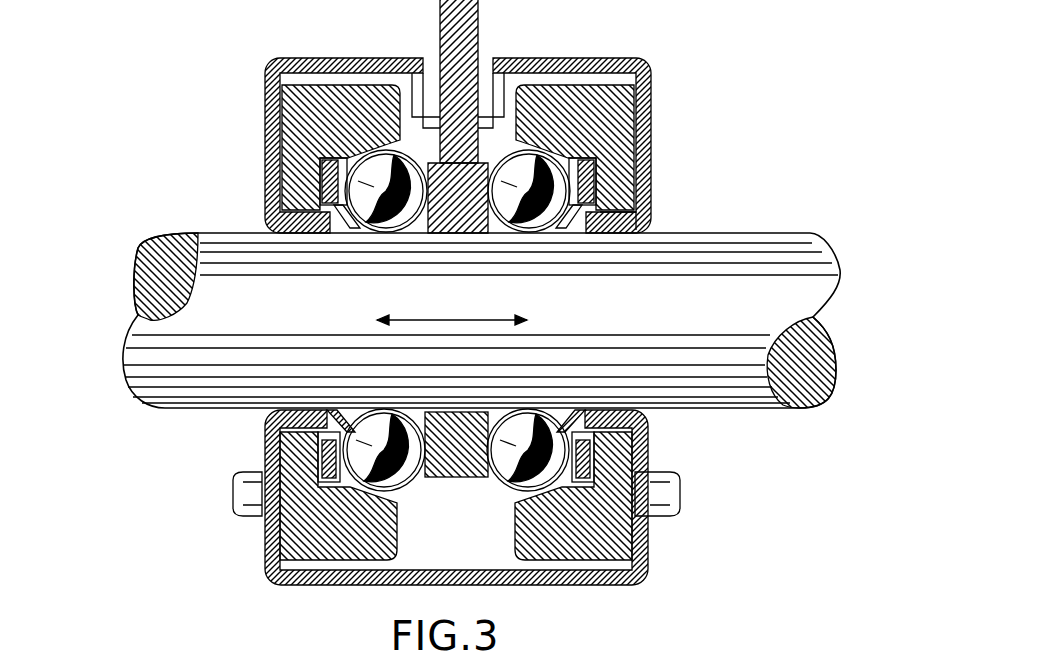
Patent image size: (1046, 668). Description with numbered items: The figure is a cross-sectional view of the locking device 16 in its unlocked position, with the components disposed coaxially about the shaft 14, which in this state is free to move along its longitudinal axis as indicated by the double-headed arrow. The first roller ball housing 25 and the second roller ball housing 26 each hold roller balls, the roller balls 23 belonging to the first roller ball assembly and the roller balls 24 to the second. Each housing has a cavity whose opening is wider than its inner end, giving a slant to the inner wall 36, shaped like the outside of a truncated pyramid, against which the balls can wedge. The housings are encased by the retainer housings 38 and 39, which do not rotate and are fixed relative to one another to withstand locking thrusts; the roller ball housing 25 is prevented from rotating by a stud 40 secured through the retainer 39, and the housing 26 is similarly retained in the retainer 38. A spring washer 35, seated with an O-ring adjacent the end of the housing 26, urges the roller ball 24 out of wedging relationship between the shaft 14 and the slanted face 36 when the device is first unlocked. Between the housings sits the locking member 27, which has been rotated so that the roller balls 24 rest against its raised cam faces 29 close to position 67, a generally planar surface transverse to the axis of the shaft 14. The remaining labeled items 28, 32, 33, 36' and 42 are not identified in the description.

The shaft 14 is at (160, 385).
The locking device 16 is at (606, 41).
The roller balls 23 is at (593, 152).
The roller balls 24 is at (327, 152).
The first roller ball housing 25 is at (615, 147).
The second roller ball housing 26 is at (295, 144).
The locking member 27 is at (455, 481).
The ball bearing 28 is at (508, 228).
The cam faces 29 is at (430, 228).
The housing bottom plate 32 is at (643, 228).
The seal lip 33 is at (580, 228).
The spring washer 35 is at (345, 218).
The inner wall 36 is at (279, 214).
The seal retainer 36' is at (635, 159).
The retainer housing 38 is at (330, 64).
The retainer housing 39 is at (652, 185).
The stud 40 is at (297, 513).
The support stem 42 is at (472, 28).
The planar surface 67 is at (456, 233).